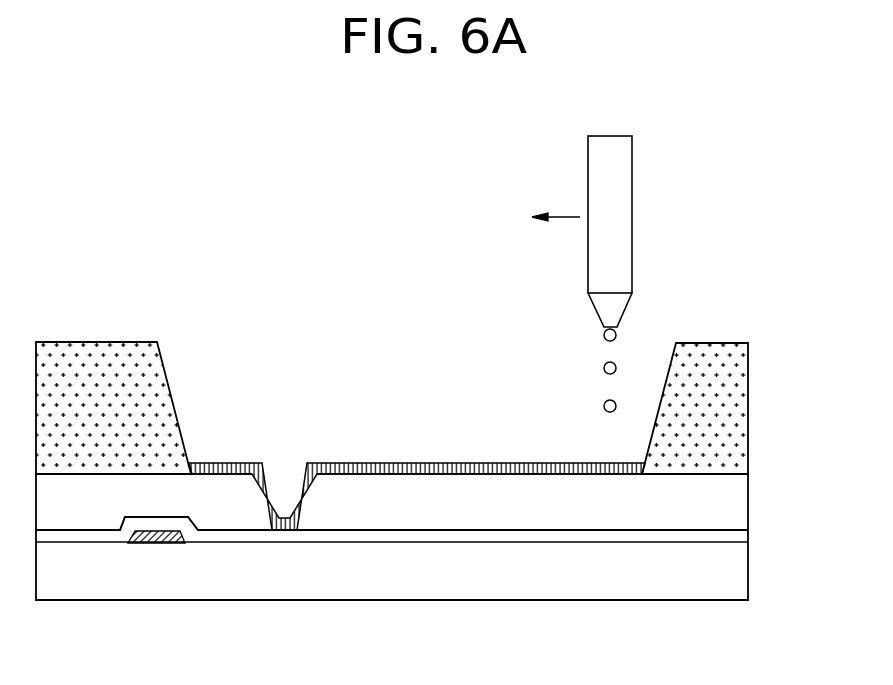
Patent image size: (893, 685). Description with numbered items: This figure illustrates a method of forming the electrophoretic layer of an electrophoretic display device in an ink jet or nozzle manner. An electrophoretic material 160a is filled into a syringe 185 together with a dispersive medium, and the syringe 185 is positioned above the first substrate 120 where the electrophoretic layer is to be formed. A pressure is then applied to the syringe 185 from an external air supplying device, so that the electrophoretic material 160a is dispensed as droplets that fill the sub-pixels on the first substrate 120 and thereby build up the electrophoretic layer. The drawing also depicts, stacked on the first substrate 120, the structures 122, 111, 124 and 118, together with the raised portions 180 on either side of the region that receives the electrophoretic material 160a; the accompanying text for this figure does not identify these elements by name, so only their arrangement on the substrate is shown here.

The first substrate 120 is at (733, 580).
The gate insulating layer 122 is at (733, 536).
The gate electrode 111 is at (157, 543).
The passivation layer 124 is at (733, 497).
The pixel electrode 118 is at (467, 464).
The bank 180 is at (733, 393).
The syringe 185 is at (630, 215).
The electrophoretic material 160a is at (614, 362).